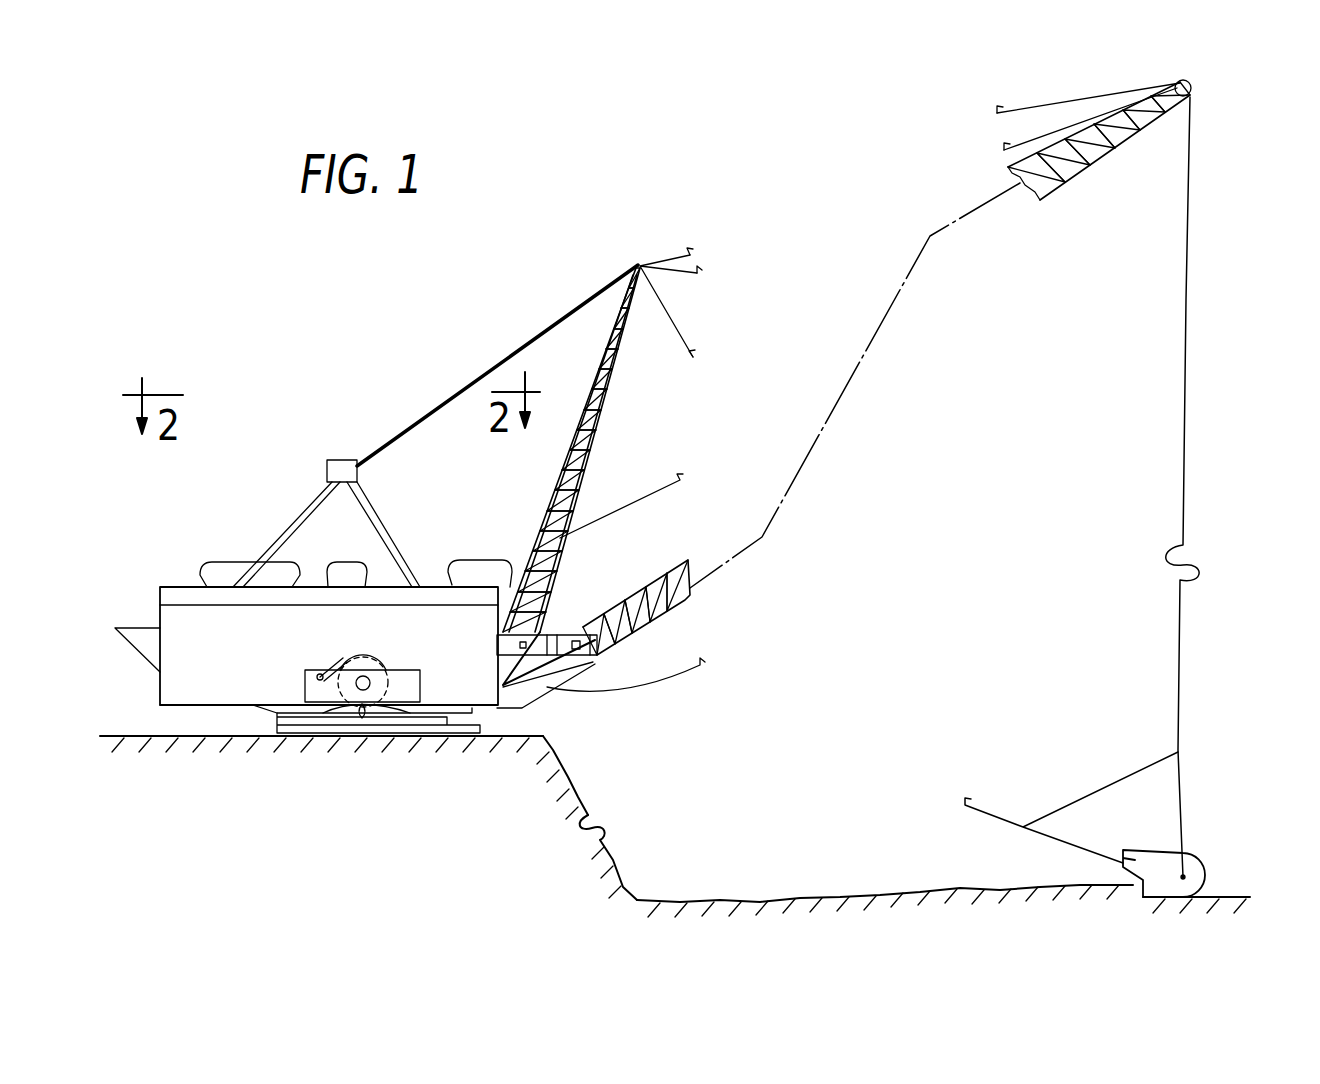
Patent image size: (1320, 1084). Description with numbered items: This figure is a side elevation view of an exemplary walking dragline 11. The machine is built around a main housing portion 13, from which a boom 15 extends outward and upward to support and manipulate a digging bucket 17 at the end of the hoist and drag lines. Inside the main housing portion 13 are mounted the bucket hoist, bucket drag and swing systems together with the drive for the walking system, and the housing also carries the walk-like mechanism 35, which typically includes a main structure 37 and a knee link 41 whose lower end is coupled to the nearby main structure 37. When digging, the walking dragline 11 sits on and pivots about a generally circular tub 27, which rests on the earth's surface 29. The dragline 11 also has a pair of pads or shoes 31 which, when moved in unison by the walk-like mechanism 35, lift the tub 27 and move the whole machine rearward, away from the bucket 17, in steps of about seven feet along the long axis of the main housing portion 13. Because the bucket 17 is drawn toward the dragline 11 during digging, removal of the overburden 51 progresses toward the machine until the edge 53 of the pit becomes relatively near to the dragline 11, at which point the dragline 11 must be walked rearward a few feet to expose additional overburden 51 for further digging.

The walking dragline 11 is at (292, 474).
The main housing portion 13 is at (178, 622).
The boom 15 is at (667, 573).
The digging bucket 17 is at (1192, 857).
The tub 27 is at (485, 724).
The earth's surface 29 is at (145, 735).
The shoes 31 is at (287, 718).
The walk-like mechanism 35 is at (302, 655).
The main structure 37 is at (305, 683).
The knee link 41 is at (333, 656).
The overburden 51 is at (578, 797).
The edge of the pit 53 is at (550, 740).